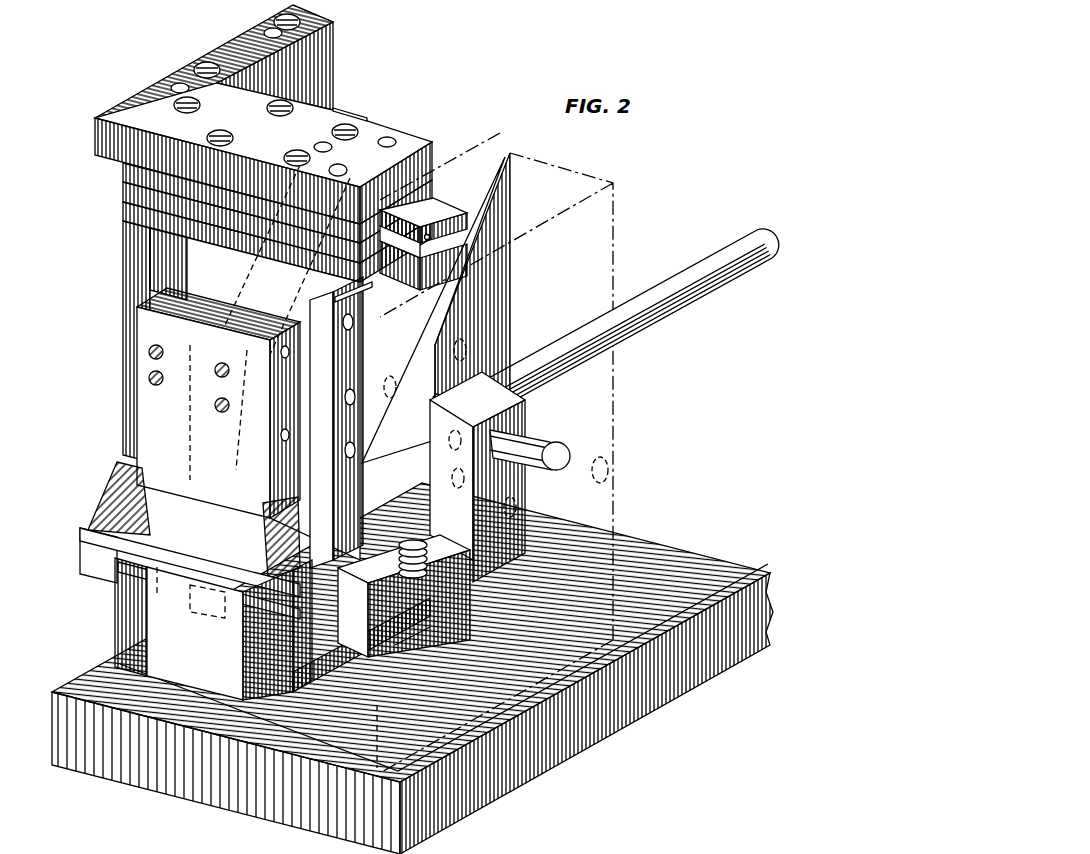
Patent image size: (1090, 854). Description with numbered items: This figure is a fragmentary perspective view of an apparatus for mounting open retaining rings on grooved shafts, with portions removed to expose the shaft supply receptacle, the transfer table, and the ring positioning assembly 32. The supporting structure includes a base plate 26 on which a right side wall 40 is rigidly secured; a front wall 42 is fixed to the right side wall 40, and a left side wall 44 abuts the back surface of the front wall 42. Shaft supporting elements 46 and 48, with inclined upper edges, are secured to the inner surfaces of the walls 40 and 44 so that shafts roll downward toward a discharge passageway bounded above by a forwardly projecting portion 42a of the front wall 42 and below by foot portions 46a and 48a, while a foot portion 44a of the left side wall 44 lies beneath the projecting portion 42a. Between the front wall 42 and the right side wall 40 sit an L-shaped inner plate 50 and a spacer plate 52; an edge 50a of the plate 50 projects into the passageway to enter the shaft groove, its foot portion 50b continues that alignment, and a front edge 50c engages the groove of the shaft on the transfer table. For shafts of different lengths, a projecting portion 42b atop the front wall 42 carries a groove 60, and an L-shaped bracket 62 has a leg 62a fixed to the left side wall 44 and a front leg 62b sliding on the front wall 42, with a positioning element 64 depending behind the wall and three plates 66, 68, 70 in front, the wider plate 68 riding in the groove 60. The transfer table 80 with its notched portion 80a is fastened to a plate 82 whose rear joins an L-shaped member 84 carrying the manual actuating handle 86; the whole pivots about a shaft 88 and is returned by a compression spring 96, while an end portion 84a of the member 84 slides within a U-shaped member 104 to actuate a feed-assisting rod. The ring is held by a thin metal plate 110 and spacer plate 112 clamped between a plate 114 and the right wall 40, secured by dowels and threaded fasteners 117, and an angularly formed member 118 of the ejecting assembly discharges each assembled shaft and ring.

The base plate 26 is at (730, 558).
The ring positioning assembly 32 is at (258, 499).
The right side wall 40 is at (600, 182).
The front wall 42 is at (128, 247).
The forwardly projecting portion 42a is at (110, 485).
The projecting portion 42b is at (433, 205).
The left side wall 44 is at (335, 72).
The foot portion 44a is at (82, 550).
The shaft supporting element 46 is at (493, 155).
The foot portion 46a is at (317, 700).
The shaft supporting element 48 is at (347, 115).
The foot portion 48a is at (120, 528).
The inner plate 50 is at (335, 290).
The edge 50a is at (357, 297).
The foot portion 50b is at (404, 596).
The front edge 50c is at (240, 640).
The spacer plate 52 is at (343, 312).
The groove 60 is at (430, 235).
The L-shaped bracket 62 is at (243, 37).
The leg 62a is at (333, 22).
The front leg 62b is at (383, 127).
The positioning element 64 is at (425, 205).
The plate 66 is at (140, 172).
The plate 68 is at (140, 195).
The plate 70 is at (140, 217).
The transfer table 80 is at (117, 628).
The notched portion 80a is at (243, 600).
The plate 82 is at (293, 743).
The L-shaped member 84 is at (526, 490).
The end portion 84a is at (395, 645).
The manual actuating handle 86 is at (722, 305).
The shaft 88 is at (564, 447).
The compression spring 96 is at (430, 542).
The U-shaped member 104 is at (148, 605).
The thin metal plate 110 is at (273, 323).
The spacer plate 112 is at (283, 402).
The plate 114 is at (140, 297).
The dowels and threaded fasteners 117 is at (150, 378).
The angularly formed member 118 is at (135, 570).